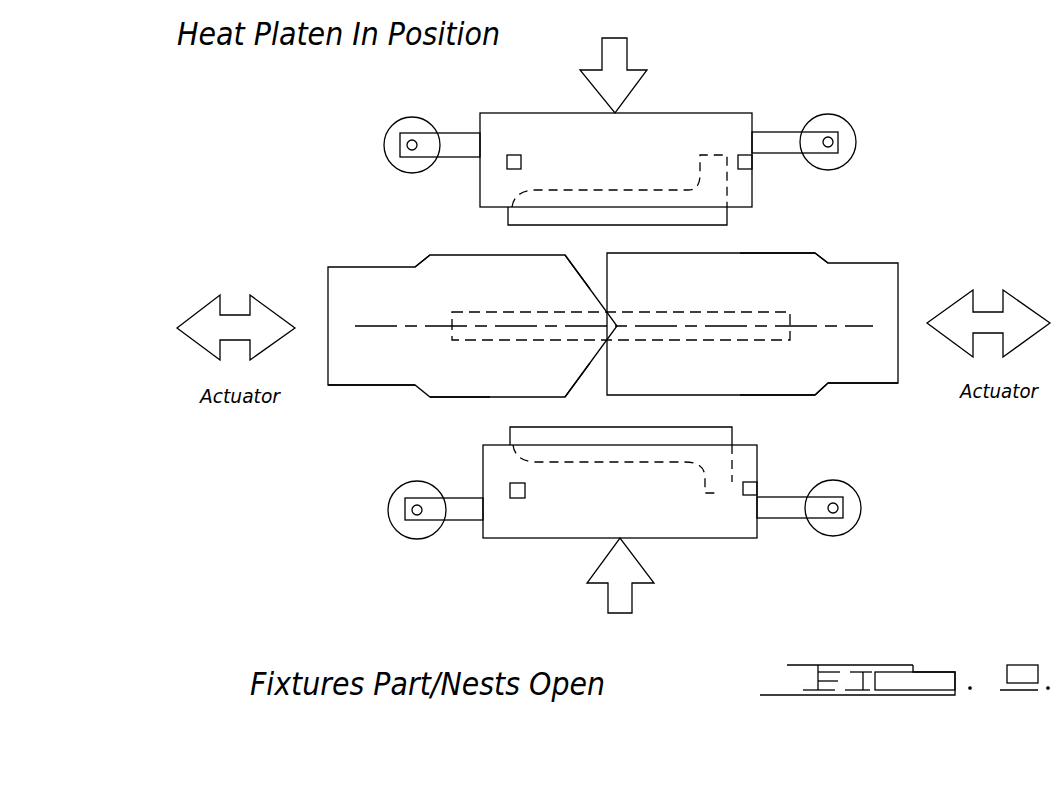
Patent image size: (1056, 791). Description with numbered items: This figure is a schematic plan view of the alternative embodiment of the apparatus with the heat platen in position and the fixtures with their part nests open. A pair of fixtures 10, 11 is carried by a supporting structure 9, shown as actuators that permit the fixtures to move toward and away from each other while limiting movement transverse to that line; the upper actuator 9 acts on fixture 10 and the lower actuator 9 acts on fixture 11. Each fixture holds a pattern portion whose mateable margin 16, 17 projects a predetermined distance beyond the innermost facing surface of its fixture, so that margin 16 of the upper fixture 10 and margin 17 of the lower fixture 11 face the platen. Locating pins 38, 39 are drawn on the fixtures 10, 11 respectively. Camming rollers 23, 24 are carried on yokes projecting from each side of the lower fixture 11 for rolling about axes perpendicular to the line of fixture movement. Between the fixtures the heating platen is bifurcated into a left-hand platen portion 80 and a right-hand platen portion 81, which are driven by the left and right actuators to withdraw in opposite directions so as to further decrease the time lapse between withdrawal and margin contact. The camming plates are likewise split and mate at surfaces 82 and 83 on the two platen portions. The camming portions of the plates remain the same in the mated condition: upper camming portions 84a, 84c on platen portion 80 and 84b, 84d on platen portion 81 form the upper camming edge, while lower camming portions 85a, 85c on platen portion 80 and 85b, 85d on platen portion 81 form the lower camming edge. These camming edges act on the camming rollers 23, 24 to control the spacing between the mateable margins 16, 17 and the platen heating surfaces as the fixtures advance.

The supporting structure 9 is at (635, 328).
The fixture 10 is at (512, 118).
The fixture 11 is at (537, 527).
The mateable margin 16 is at (644, 227).
The mateable margin 17 is at (658, 428).
The camming roller 23 is at (407, 530).
The camming roller 24 is at (845, 528).
The locating pin 38 is at (517, 172).
The locating pin 39 is at (525, 486).
The platen portion 80 is at (565, 306).
The platen portion 81 is at (682, 308).
The mating surface of split camming plate 82 is at (433, 373).
The mating surface of split camming plate 83 is at (795, 378).
The camming portion 84a is at (445, 254).
The camming portion 84b is at (750, 253).
The camming portion 84c is at (580, 272).
The camming portion 84d is at (829, 258).
The camming portion 85a is at (470, 400).
The camming portion 85b is at (778, 397).
The camming portion 85c is at (583, 377).
The camming portion 85d is at (830, 387).